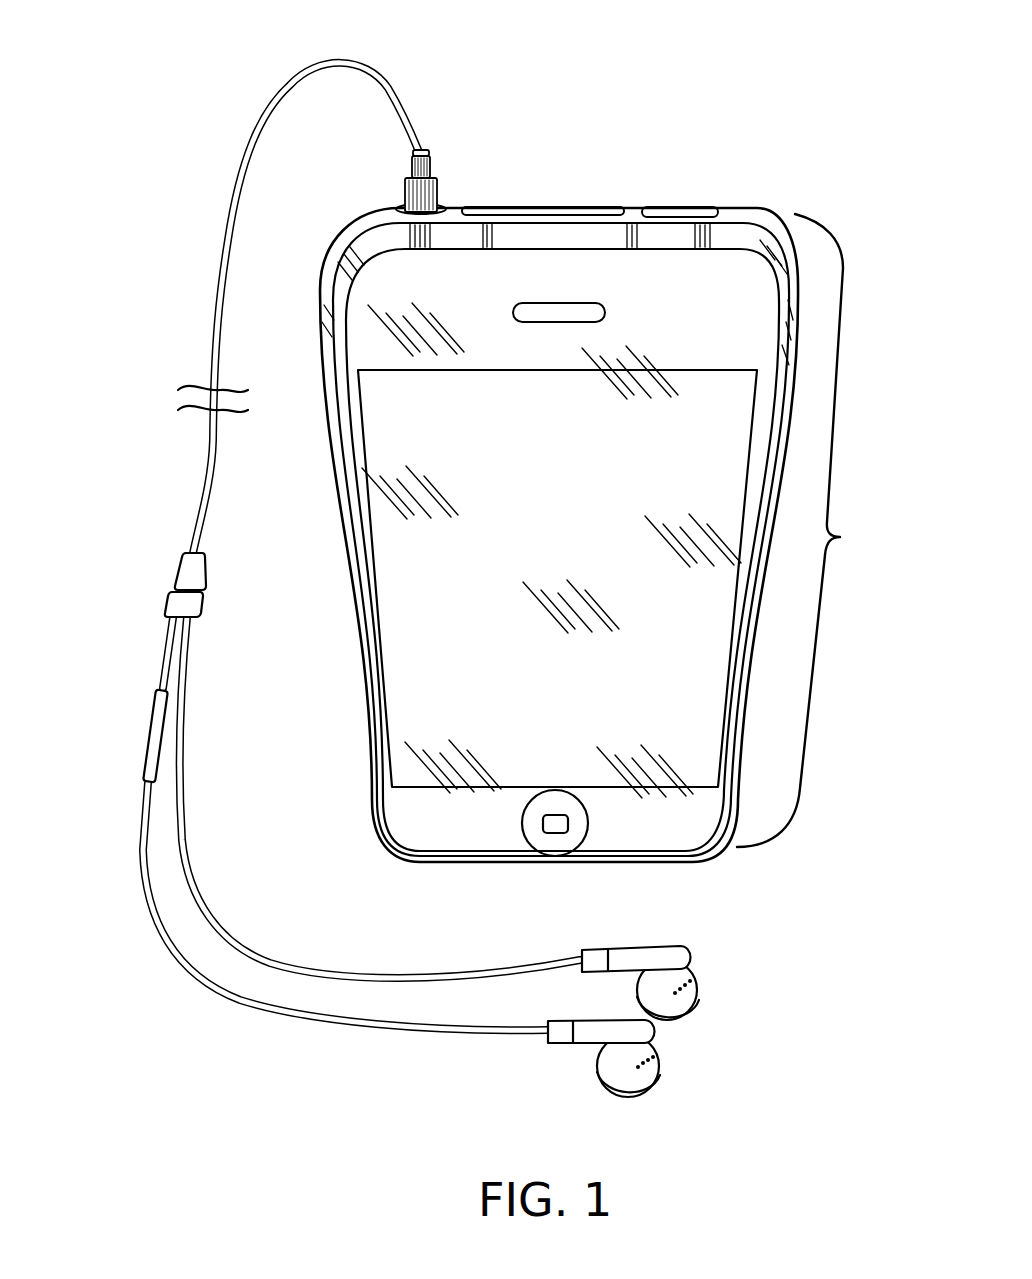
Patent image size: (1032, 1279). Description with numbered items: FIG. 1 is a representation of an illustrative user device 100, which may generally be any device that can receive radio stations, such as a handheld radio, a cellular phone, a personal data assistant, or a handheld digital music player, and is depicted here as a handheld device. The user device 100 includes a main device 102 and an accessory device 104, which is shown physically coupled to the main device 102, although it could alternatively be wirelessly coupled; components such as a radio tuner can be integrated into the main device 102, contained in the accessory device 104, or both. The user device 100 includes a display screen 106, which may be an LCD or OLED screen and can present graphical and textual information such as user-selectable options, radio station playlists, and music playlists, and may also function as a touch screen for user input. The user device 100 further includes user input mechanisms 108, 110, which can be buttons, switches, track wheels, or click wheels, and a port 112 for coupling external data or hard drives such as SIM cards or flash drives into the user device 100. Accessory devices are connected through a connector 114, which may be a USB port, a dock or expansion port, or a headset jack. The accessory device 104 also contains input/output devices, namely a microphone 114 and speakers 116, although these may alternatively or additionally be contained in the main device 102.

The user device 100 is at (797, 52).
The main device 102 is at (607, 535).
The accessory device 104 is at (293, 78).
The display screen 106 is at (582, 547).
The user input mechanism 108 is at (543, 838).
The user input mechanism 110 is at (681, 206).
The port 112 is at (557, 207).
The connector 114 is at (403, 208).
The speakers 116 is at (698, 998).